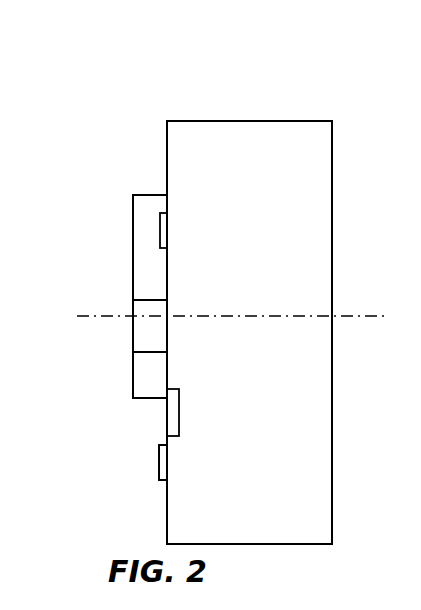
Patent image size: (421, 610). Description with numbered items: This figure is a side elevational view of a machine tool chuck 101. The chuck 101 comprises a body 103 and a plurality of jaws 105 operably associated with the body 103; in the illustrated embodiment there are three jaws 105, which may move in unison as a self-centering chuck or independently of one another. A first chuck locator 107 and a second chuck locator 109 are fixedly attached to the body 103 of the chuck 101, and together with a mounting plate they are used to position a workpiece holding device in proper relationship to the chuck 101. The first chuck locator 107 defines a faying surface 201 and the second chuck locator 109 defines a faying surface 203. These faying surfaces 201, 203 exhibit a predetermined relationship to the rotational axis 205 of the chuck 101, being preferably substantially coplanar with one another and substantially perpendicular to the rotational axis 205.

The machine tool chuck 101 is at (325, 92).
The body 103 is at (308, 178).
The jaws 105 is at (145, 275).
The first chuck locator 107 is at (146, 243).
The second chuck locator 109 is at (150, 457).
The faying surface 201 is at (158, 222).
The faying surface 203 is at (157, 470).
The rotational axis 205 is at (193, 316).